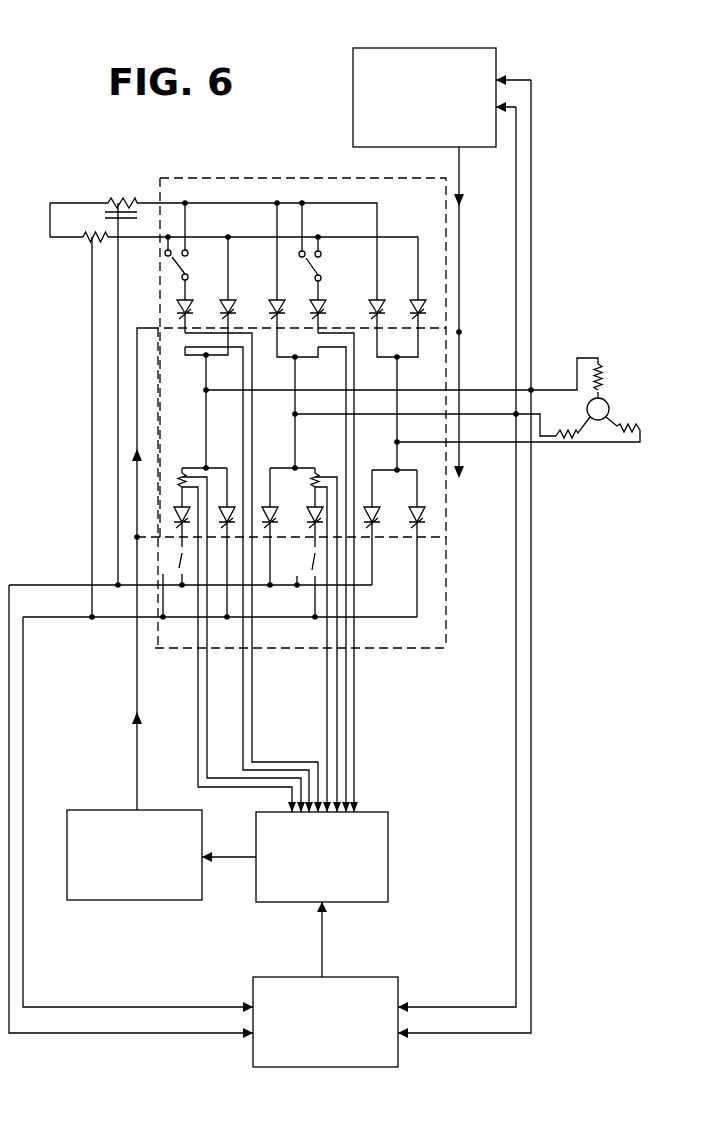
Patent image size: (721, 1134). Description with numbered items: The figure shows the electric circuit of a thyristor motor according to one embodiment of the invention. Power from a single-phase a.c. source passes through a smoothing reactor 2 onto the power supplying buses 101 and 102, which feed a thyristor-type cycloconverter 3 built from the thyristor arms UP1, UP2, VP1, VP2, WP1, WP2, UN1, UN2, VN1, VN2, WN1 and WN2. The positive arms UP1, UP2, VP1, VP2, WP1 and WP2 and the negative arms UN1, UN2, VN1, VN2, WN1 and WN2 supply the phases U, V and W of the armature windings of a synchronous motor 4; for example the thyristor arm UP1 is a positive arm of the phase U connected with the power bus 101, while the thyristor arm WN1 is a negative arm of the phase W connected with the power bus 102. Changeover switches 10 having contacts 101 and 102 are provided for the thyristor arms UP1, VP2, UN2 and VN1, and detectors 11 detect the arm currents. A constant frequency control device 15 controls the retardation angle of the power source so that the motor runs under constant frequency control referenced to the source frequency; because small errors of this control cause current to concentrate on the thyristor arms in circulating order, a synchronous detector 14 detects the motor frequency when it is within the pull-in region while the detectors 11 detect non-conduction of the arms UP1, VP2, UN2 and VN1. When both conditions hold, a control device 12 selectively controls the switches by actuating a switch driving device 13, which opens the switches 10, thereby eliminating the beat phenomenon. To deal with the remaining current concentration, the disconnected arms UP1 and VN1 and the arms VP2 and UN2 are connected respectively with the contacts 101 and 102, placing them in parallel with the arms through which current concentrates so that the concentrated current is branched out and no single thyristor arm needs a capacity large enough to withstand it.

The smoothing reactor 2 is at (121, 203).
The cycloconverter 3 is at (345, 176).
The synchronous motor 4 is at (590, 398).
The changeover switch 10 is at (181, 278).
The detector 11 is at (183, 347).
The control device 12 is at (389, 852).
The switch driving device 13 is at (108, 810).
The synchronous detector 14 is at (370, 977).
The constant frequency control device 15 is at (430, 48).
The power supplying bus 101 is at (188, 250).
The power supplying bus 102 is at (165, 256).
The thyristor arm UP1 is at (192, 299).
The thyristor arm UP2 is at (233, 299).
The thyristor arm VP1 is at (281, 299).
The thyristor arm VP2 is at (333, 293).
The thyristor arm WP1 is at (382, 299).
The thyristor arm WP2 is at (424, 301).
The thyristor arm UN1 is at (234, 506).
The thyristor arm UN2 is at (176, 506).
The thyristor arm VN1 is at (310, 506).
The thyristor arm VN2 is at (276, 506).
The thyristor arm WN1 is at (424, 512).
The thyristor arm WN2 is at (378, 506).
The phase U is at (601, 372).
The phase V is at (572, 428).
The phase W is at (605, 442).